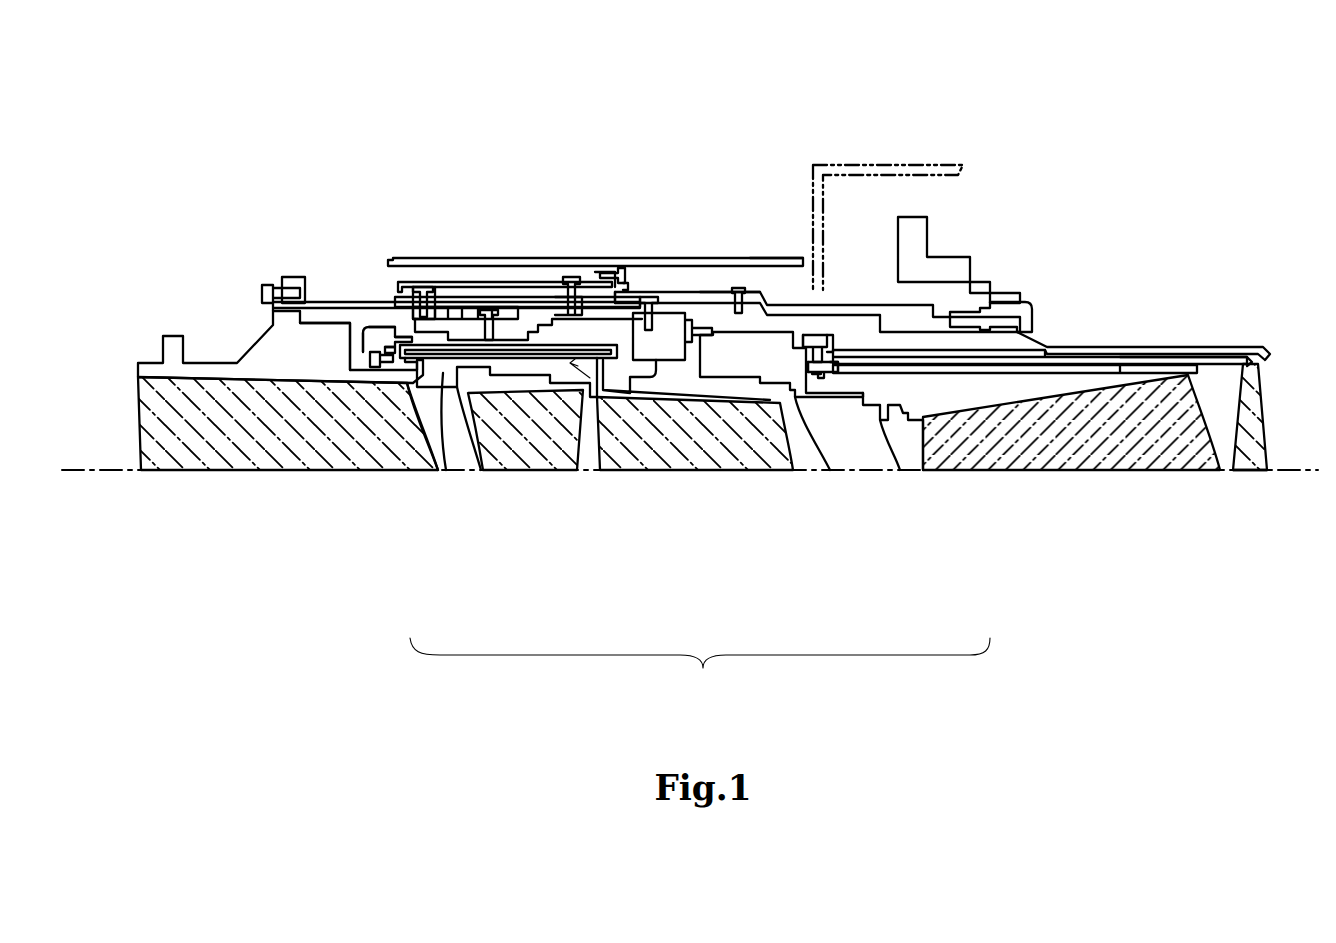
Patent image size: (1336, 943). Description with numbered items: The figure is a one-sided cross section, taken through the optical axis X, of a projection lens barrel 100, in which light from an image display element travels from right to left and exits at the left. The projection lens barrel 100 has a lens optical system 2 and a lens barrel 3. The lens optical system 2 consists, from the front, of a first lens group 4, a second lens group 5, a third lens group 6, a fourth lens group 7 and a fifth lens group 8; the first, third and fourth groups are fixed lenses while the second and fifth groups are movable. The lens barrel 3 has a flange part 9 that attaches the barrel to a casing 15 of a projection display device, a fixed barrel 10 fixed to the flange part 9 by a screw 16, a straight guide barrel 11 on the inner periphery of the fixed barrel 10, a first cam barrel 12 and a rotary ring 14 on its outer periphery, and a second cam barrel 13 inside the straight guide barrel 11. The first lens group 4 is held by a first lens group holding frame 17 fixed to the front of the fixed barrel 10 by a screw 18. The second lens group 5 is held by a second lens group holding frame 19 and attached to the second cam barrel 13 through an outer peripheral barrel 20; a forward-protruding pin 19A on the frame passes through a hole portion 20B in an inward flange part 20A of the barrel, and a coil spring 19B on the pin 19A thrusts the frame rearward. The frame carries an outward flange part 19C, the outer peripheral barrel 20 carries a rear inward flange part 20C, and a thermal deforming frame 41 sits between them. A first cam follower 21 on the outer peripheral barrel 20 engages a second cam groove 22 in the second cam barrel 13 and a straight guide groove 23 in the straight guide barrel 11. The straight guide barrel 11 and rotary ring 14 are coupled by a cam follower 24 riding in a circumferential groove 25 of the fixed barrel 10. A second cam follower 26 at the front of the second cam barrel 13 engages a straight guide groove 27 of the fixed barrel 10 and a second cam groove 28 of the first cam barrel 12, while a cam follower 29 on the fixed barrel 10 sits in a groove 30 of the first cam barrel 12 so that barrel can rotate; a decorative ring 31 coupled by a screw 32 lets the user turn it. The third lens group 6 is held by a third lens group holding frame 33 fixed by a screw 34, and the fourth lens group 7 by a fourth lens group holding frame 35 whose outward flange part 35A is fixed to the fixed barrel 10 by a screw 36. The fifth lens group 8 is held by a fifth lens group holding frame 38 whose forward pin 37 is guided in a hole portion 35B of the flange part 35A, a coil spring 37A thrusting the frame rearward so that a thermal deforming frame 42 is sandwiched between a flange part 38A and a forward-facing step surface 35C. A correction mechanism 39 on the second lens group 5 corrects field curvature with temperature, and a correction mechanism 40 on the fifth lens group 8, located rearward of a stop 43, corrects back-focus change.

The projection lens barrel 100 is at (298, 142).
The lens optical system 2 is at (700, 666).
The lens barrel 3 is at (540, 155).
The first lens group 4 is at (380, 548).
The second lens group 5 is at (510, 470).
The third lens group 6 is at (685, 470).
The fourth lens group 7 is at (1055, 468).
The fifth lens group 8 is at (1250, 468).
The flange part 9 is at (930, 230).
The fixed barrel 10 is at (763, 317).
The straight guide barrel 11 is at (536, 319).
The first cam barrel 12 is at (482, 297).
The second cam barrel 13 is at (393, 335).
The rotary ring 14 is at (690, 300).
The casing 15 is at (900, 160).
The screw 16 is at (992, 306).
The first lens group holding frame 17 is at (238, 362).
The screw 18 is at (262, 290).
The second lens group holding frame 19 is at (470, 470).
The pin 19A is at (370, 330).
The coil spring 19B is at (388, 346).
The flange part 19C is at (450, 470).
The outer peripheral barrel 20 is at (398, 340).
The flange part 20A is at (370, 358).
The hole portion 20B is at (370, 352).
The flange part 20C is at (640, 365).
The first cam follower 21 is at (507, 300).
The second cam groove 22 is at (470, 307).
The straight guide groove 23 is at (513, 319).
The cam follower 24 is at (676, 292).
The groove 25 is at (627, 283).
The second cam follower 26 is at (441, 300).
The straight guide groove 27 is at (406, 337).
The second cam groove 28 is at (405, 287).
The cam follower 29 is at (640, 300).
The groove 30 is at (570, 277).
The decorative ring 31 is at (716, 258).
The screw 32 is at (621, 268).
The third lens group holding frame 33 is at (811, 378).
The screw 34 is at (686, 332).
The fourth lens group holding frame 35 is at (905, 420).
The flange part 35A is at (800, 378).
The hole portion 35B is at (816, 378).
The step surface 35C is at (1127, 367).
The screw 36 is at (835, 342).
The pin 37 is at (739, 288).
The coil spring 37A is at (826, 378).
The fifth lens group holding frame 38 is at (1237, 357).
The flange part 38A is at (832, 378).
The correction mechanism 39 is at (585, 470).
The correction mechanism 40 is at (1217, 330).
The thermal deforming frame 41 is at (548, 470).
The thermal deforming frame 42 is at (1067, 367).
The stop 43 is at (838, 375).
The optical axis X is at (82, 468).